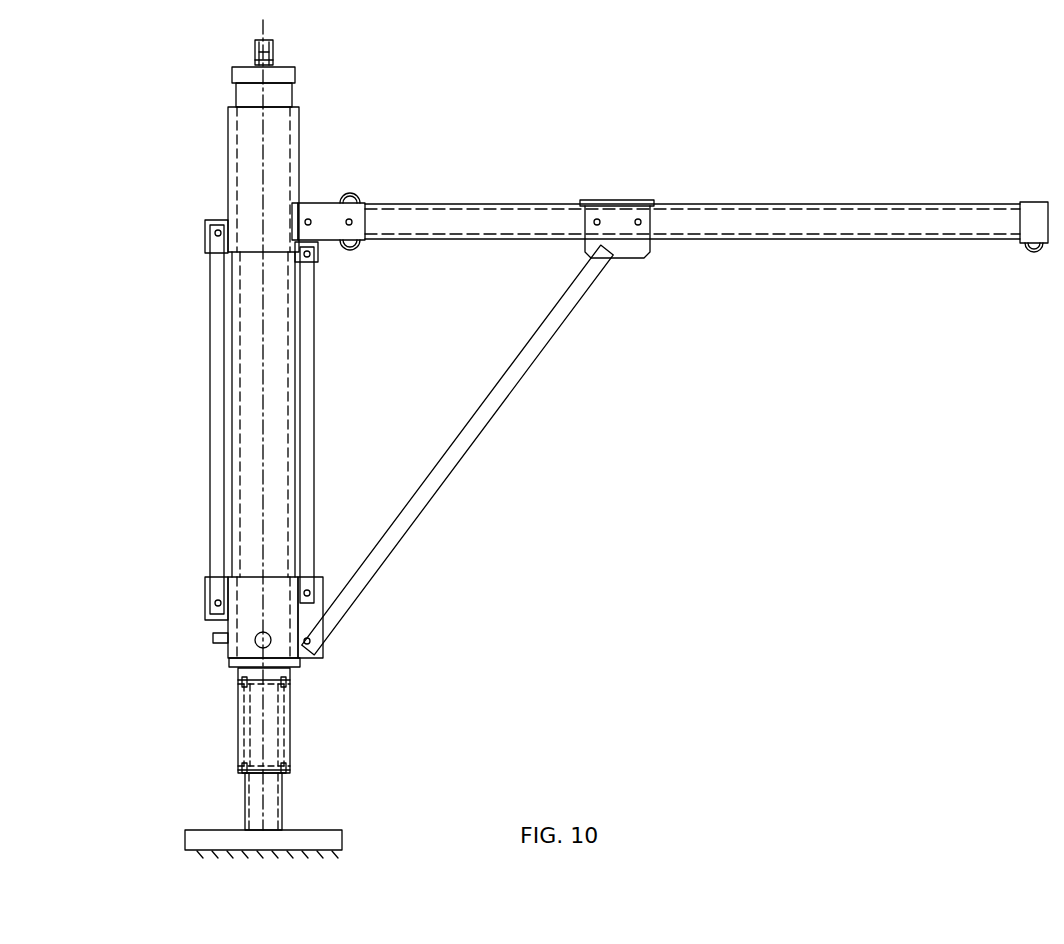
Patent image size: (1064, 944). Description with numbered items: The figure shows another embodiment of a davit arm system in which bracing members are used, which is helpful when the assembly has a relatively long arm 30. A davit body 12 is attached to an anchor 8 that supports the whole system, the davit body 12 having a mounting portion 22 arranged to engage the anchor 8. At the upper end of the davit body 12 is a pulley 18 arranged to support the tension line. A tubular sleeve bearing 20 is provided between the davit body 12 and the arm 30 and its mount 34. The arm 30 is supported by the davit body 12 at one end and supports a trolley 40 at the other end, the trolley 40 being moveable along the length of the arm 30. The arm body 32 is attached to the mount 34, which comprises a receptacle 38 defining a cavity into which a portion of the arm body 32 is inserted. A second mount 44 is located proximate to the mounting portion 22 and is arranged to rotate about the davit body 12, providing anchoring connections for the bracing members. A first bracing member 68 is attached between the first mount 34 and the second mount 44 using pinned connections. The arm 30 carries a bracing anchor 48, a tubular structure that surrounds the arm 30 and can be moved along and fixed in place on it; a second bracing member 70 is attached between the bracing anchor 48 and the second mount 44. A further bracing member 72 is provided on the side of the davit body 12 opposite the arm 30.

The anchor 8 is at (283, 801).
The davit body 12 is at (237, 435).
The pulley 18 is at (284, 57).
The bearing 20 is at (236, 108).
The mounting portion 22 is at (291, 723).
The arm 30 is at (498, 204).
The arm body 32 is at (431, 240).
The mount 34 is at (228, 191).
The receptacle 38 is at (337, 202).
The trolley 40 is at (1034, 252).
The second mount 44 is at (213, 632).
The bracing anchor 48 is at (643, 202).
The first bracing member 68 is at (318, 421).
The second bracing member 70 is at (480, 428).
The bracing member 72 is at (210, 334).